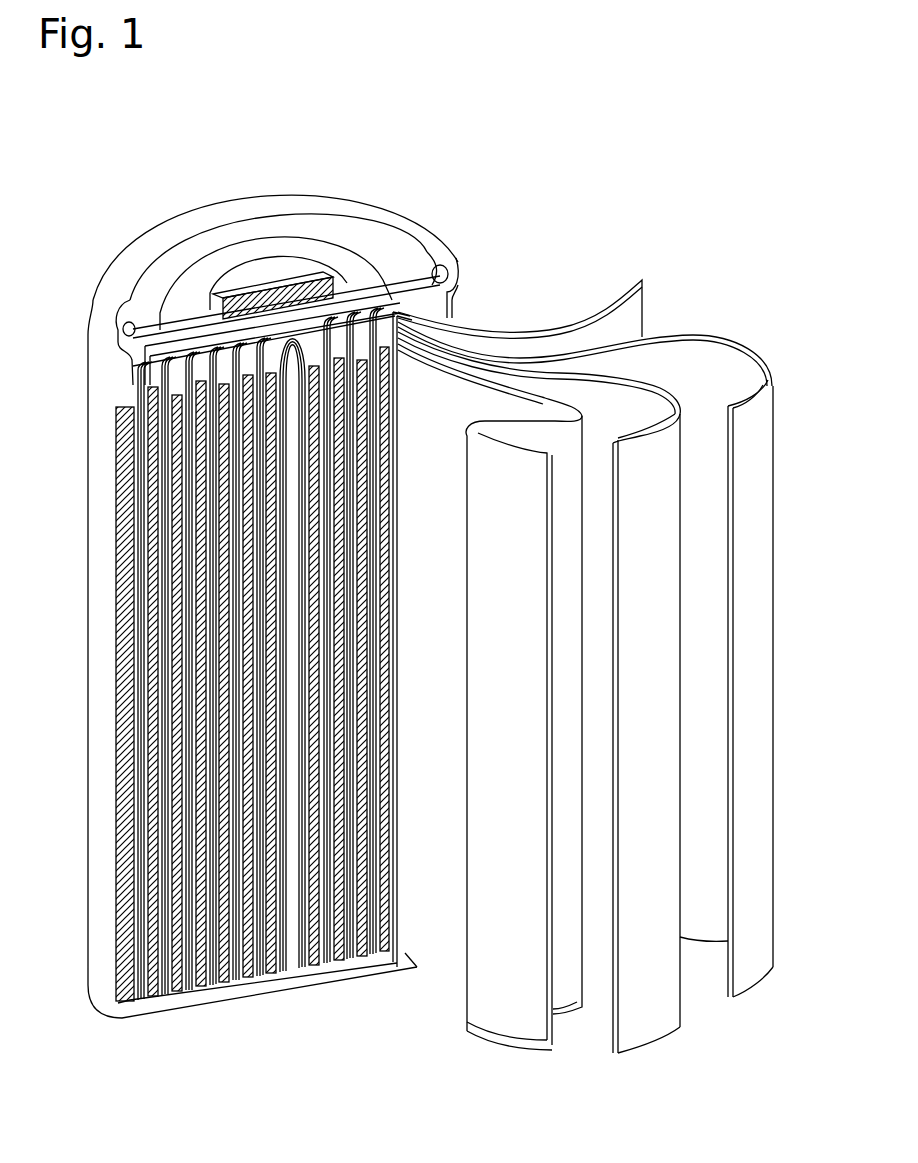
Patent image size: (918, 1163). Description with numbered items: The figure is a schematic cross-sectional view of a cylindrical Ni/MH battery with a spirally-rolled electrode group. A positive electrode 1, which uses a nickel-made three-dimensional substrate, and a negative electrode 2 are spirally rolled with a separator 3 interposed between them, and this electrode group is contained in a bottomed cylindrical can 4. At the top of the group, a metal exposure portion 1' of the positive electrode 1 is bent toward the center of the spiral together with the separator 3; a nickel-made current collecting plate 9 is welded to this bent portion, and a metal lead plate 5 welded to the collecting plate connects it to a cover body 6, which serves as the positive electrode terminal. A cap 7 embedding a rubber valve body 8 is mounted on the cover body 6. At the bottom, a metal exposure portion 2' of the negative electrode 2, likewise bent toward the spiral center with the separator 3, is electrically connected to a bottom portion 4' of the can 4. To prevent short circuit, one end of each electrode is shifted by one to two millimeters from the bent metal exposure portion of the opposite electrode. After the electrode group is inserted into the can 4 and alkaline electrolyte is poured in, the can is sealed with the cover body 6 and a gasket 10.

The positive electrode 1 is at (433, 674).
The metal exposure portion of the positive electrode 1' is at (416, 328).
The negative electrode 2 is at (407, 720).
The metal exposure portion of the negative electrode 2' is at (397, 763).
The separator 3 is at (123, 357).
The bottomed cylindrical can 4 is at (255, 606).
The bottom portion of the can 4' is at (257, 1002).
The metal lead plate 5 is at (362, 297).
The cover body 6 is at (347, 235).
The cap 7 is at (263, 260).
The rubber valve body 8 is at (253, 292).
The current collecting plate 9 is at (207, 343).
The gasket 10 is at (450, 265).